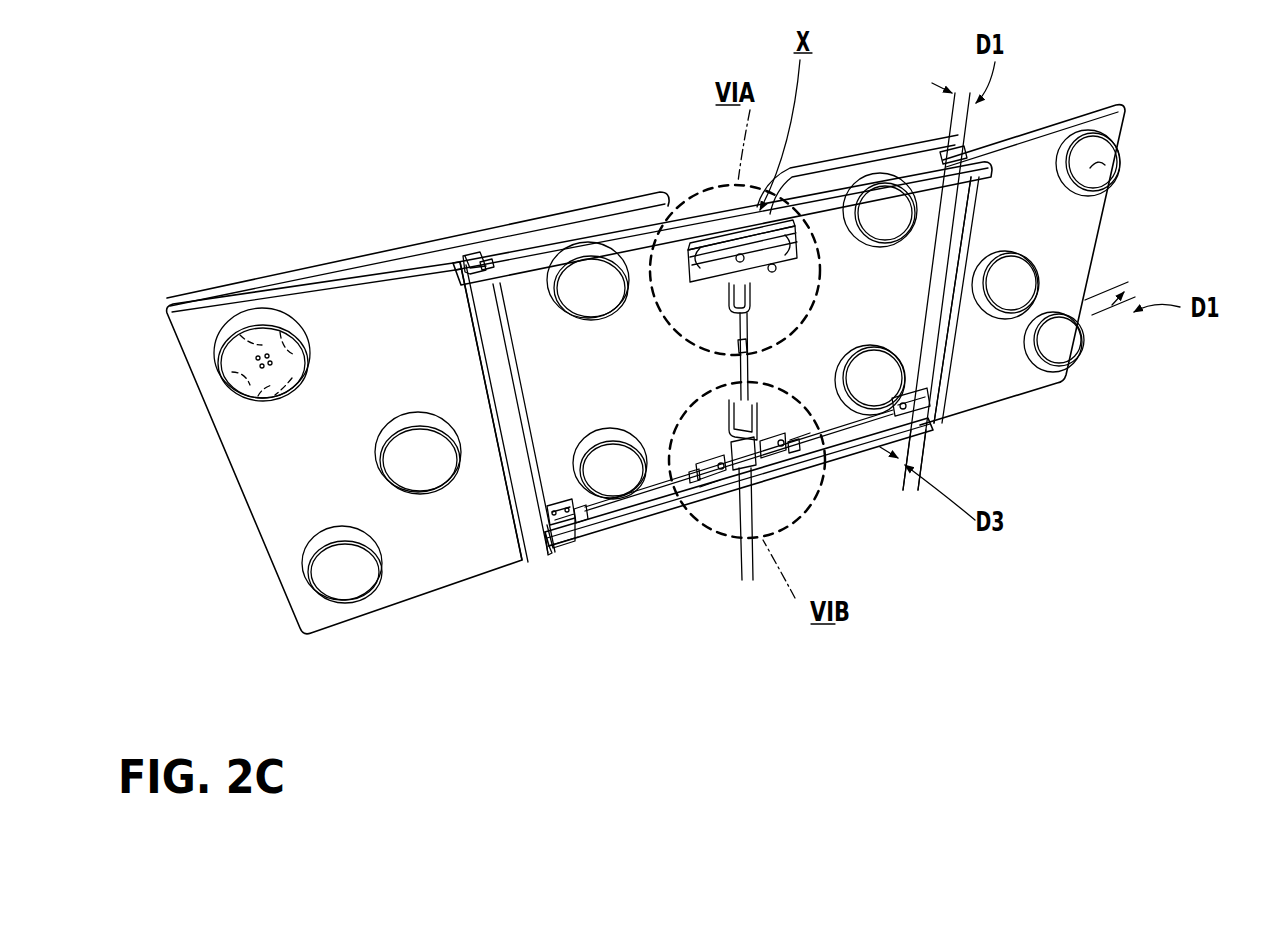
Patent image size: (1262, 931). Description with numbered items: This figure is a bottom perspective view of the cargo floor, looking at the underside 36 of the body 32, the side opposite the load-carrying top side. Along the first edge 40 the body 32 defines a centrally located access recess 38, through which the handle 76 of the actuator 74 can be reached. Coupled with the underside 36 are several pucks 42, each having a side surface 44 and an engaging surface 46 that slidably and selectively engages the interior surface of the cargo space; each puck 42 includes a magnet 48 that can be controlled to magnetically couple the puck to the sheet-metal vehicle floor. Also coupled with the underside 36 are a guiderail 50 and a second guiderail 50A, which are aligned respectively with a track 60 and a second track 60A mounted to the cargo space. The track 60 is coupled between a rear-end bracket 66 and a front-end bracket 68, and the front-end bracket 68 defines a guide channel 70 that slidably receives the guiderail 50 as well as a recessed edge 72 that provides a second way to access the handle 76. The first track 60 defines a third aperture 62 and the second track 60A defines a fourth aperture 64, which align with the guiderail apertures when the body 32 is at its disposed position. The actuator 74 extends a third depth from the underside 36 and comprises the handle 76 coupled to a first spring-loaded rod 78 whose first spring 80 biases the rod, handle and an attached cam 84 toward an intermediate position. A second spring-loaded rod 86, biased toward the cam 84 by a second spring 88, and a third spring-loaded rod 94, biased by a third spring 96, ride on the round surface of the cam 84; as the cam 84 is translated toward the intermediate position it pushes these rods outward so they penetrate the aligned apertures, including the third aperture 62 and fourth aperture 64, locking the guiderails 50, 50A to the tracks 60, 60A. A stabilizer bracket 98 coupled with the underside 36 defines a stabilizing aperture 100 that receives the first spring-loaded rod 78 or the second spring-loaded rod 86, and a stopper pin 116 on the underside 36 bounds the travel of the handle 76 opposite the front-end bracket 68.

The body 32 is at (333, 294).
The underside 36 is at (868, 288).
The access recess 38 is at (690, 206).
The first edge 40 is at (382, 247).
The puck 42 is at (1118, 138).
The side surface 44 is at (1091, 108).
The engaging surface 46 is at (1096, 167).
The magnet 48 is at (272, 312).
The guiderail 50 is at (466, 256).
The second guiderail 50A is at (944, 152).
The track 60 is at (487, 353).
The second track 60A is at (965, 228).
The third aperture 62 is at (574, 556).
The fourth aperture 64 is at (930, 400).
The rear-end bracket 66 is at (633, 527).
The front-end bracket 68 is at (620, 250).
The guide channel 70 is at (489, 262).
The recessed edge 72 is at (820, 197).
The actuator 74 is at (776, 374).
The handle 76 is at (636, 245).
The first spring-loaded rod 78 is at (746, 370).
The first spring 80 is at (740, 288).
The cam 84 is at (757, 545).
The second spring-loaded rod 86 is at (583, 521).
The second spring 88 is at (565, 530).
The third spring-loaded rod 94 is at (843, 462).
The third spring 96 is at (930, 474).
The stabilizer bracket 98 is at (742, 500).
The stabilizing aperture 100 is at (762, 299).
The stopper pin 116 is at (880, 198).